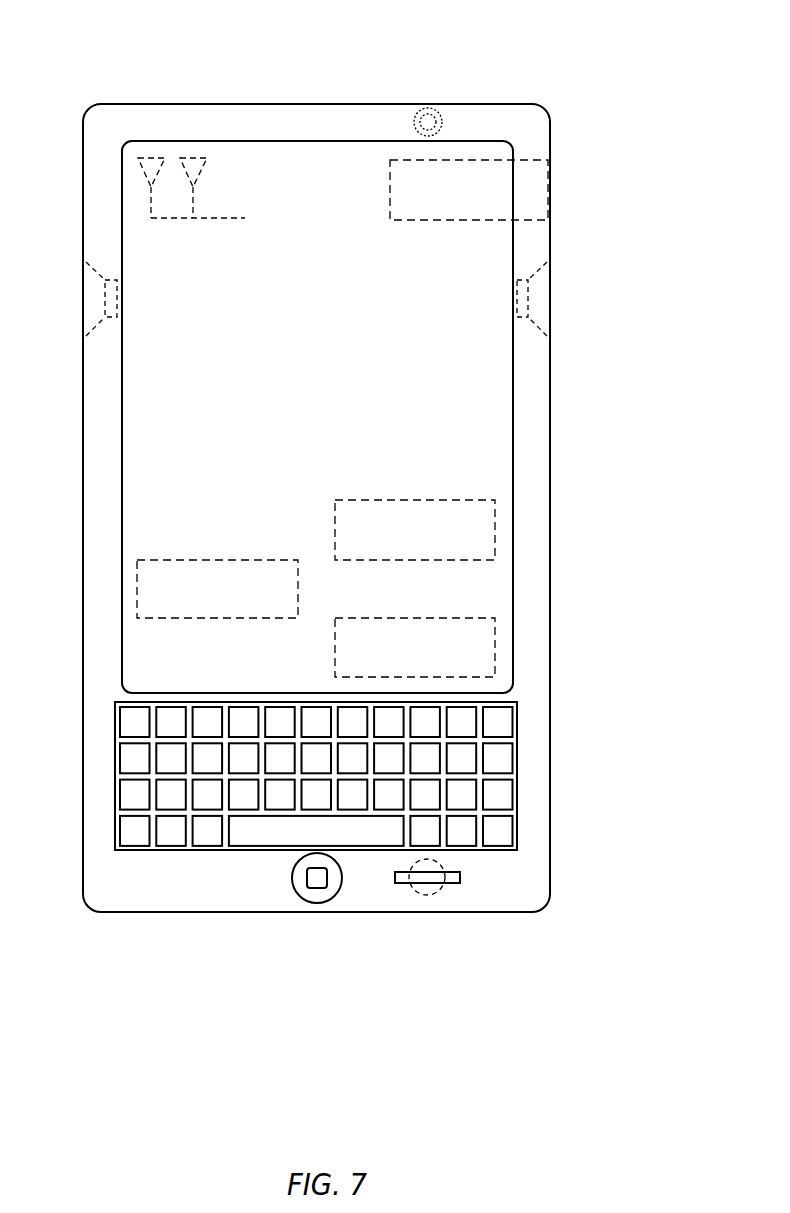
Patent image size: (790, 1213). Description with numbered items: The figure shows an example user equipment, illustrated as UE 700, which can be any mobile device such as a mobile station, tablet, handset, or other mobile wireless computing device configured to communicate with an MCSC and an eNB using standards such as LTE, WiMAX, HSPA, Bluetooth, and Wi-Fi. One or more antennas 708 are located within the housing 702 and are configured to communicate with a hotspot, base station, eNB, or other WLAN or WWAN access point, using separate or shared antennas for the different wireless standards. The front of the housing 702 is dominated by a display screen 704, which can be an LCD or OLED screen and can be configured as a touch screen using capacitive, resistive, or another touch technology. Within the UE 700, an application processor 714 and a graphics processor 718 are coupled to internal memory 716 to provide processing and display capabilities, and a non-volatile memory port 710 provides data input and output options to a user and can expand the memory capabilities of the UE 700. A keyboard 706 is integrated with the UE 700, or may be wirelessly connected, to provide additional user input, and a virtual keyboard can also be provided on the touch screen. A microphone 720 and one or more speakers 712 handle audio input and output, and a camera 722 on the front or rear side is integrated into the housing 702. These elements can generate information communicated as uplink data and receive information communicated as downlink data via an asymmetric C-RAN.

The user equipment (UE) 700 is at (541, 38).
The housing 702 is at (318, 104).
The display screen 704 is at (492, 407).
The keyboard 706 is at (517, 775).
The antennas 708 is at (194, 158).
The non-volatile memory port 710 is at (550, 190).
The speakers 712 is at (93, 297).
The application processor 714 is at (415, 500).
The internal memory 716 is at (415, 618).
The graphics processor 718 is at (218, 560).
The microphone 720 is at (428, 897).
The camera 722 is at (437, 110).